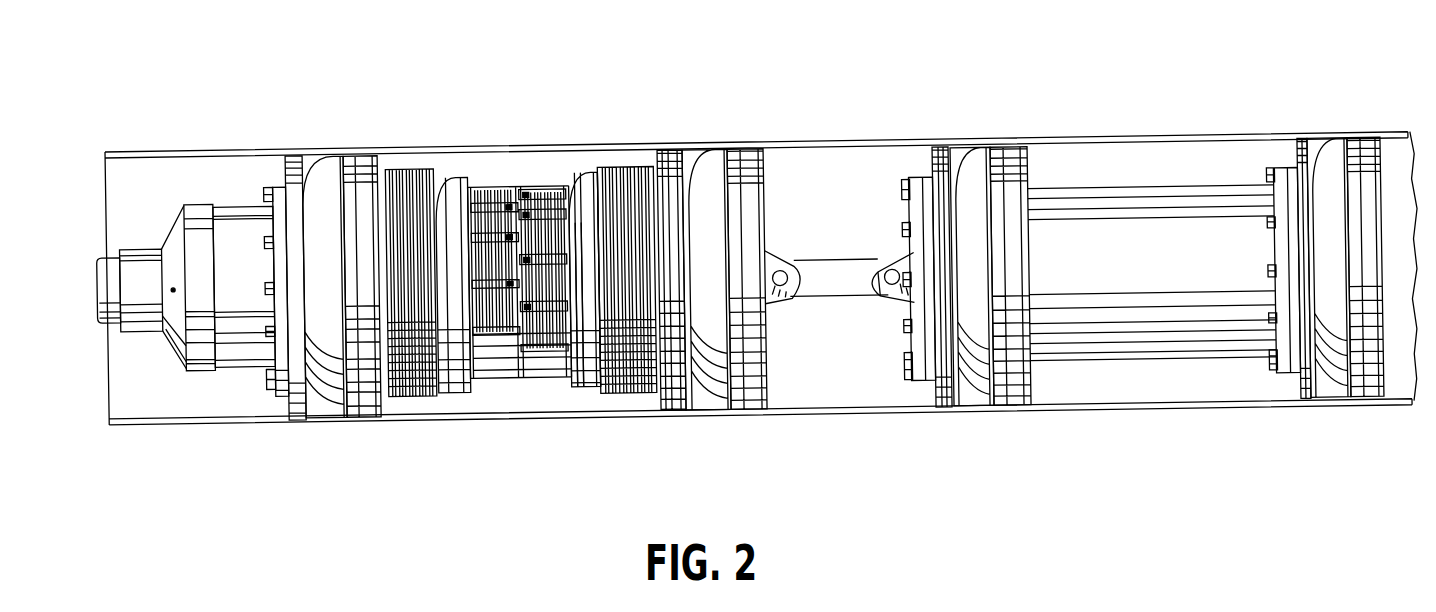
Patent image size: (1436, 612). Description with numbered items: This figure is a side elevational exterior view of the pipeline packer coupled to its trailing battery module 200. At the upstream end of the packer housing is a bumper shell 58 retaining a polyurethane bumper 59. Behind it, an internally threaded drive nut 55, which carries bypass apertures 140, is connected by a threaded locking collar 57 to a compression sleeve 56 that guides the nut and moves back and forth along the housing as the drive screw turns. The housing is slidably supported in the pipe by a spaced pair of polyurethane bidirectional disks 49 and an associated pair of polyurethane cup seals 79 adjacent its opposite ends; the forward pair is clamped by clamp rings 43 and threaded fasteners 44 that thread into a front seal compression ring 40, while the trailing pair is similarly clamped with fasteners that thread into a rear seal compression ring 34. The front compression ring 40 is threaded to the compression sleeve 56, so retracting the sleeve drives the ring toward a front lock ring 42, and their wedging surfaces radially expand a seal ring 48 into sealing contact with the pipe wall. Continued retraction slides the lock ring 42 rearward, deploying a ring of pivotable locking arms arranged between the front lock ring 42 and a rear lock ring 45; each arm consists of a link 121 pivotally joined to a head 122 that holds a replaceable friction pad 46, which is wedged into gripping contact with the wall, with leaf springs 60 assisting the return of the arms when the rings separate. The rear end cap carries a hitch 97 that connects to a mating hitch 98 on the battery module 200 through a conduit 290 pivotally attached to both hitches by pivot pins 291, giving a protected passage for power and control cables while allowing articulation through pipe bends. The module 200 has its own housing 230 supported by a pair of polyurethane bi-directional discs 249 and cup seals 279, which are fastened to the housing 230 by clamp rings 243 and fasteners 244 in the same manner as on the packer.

The battery module 200 is at (1168, 182).
The bumper shell 58 is at (128, 258).
The polyurethane bumper 59 is at (121, 325).
The drive nut 55 is at (172, 241).
The apertures 140 is at (158, 333).
The threaded locking collar 57 is at (172, 347).
The compression sleeve 56 is at (233, 218).
The clamp rings 43 is at (253, 212).
The threaded fasteners 44 is at (232, 372).
The bidirectional disks 49 is at (287, 161).
The cup seals 79 is at (352, 185).
The front seal compression ring 40 is at (387, 175).
The seal ring 48 is at (395, 405).
The front lock ring 42 is at (452, 185).
The head 122 is at (478, 271).
The leaf springs 60 is at (538, 210).
The friction pad 46 is at (548, 332).
The rear lock ring 45 is at (576, 182).
The link 121 is at (573, 300).
The rear seal compression ring 34 is at (648, 178).
The hitch 97 is at (767, 263).
The conduit 290 is at (825, 271).
The hitch 98 is at (893, 309).
The pivot pins 291 is at (872, 285).
The fasteners 244 is at (905, 192).
The clamp rings 243 is at (935, 190).
The bi-directional discs 249 is at (936, 165).
The cup seals 279 is at (1010, 205).
The housing 230 is at (1207, 215).